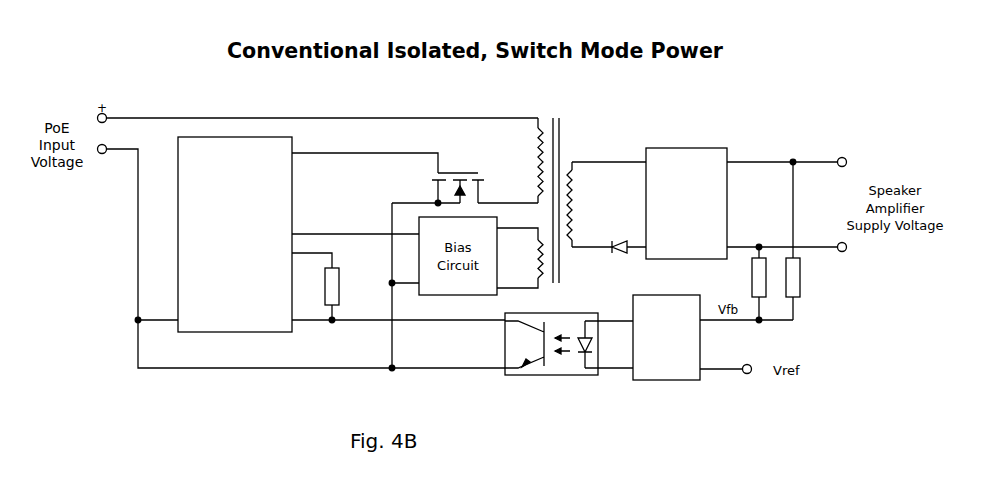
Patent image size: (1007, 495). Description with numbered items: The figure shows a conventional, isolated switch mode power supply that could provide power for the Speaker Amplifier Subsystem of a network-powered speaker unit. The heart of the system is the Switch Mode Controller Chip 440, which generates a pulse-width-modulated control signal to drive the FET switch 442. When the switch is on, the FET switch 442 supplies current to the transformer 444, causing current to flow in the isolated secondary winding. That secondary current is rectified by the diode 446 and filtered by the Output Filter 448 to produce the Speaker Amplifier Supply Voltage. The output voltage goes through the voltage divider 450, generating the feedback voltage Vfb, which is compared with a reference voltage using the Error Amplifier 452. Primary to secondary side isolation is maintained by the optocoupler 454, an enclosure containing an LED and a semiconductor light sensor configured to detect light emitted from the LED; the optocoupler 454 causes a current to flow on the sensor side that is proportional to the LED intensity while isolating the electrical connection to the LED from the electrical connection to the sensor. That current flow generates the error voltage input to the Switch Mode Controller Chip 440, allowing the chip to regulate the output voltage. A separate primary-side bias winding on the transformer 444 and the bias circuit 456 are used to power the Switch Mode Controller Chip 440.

The switch mode controller chip 440 is at (261, 234).
The FET switch 442 is at (415, 177).
The transformer 444 is at (575, 200).
The diode 446 is at (618, 237).
The output filter 448 is at (686, 192).
The voltage divider 450 is at (775, 241).
The error amplifier 452 is at (692, 355).
The optocoupler 454 is at (569, 361).
The bias circuit 456 is at (398, 308).